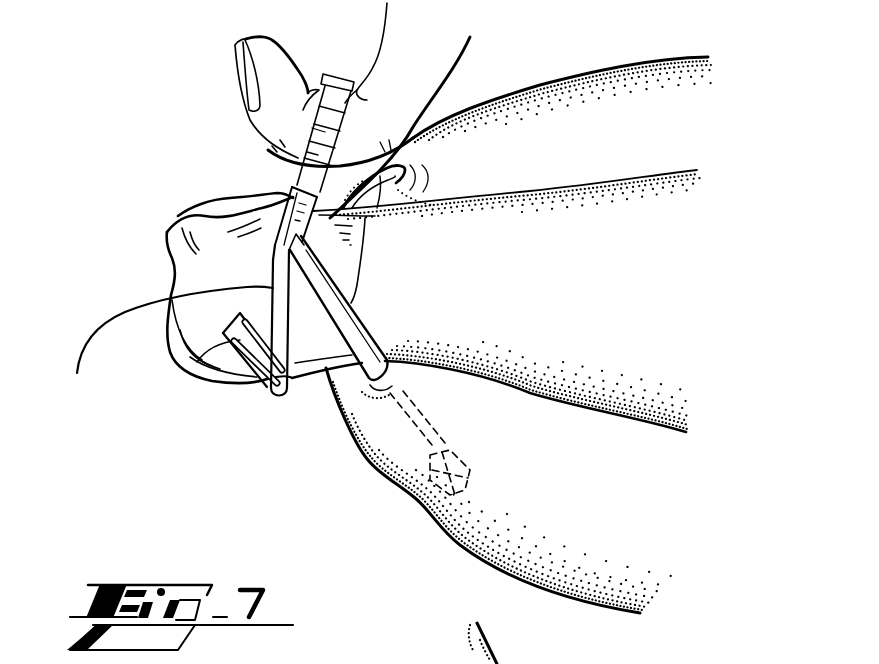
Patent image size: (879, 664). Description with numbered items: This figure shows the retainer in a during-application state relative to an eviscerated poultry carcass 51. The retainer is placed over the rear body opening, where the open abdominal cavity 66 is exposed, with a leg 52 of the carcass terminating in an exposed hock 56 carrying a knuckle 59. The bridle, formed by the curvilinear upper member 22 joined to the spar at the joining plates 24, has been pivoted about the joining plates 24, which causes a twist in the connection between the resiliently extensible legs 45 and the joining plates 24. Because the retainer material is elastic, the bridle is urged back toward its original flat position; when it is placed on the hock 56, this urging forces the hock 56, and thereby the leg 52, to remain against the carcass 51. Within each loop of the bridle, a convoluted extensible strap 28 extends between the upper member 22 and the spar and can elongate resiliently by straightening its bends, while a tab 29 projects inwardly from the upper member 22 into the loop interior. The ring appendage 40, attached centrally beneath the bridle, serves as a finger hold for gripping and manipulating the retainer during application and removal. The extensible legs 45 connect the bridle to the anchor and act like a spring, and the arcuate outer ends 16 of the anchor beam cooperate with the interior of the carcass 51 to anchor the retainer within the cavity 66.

The outer ends 16 is at (407, 443).
The curvilinear upper strip or member 22 is at (292, 390).
The joining plates 24 is at (77, 371).
The extensible strap 28 is at (228, 212).
The tab 29 is at (233, 357).
The appendage 40 is at (262, 166).
The resiliently extensible legs 45 is at (340, 292).
The eviscerated poultry carcass 51 is at (623, 108).
The leg 52 is at (687, 299).
The hock 56 is at (197, 362).
The knuckle 59 is at (178, 216).
The open abdominal cavity 66 is at (410, 180).